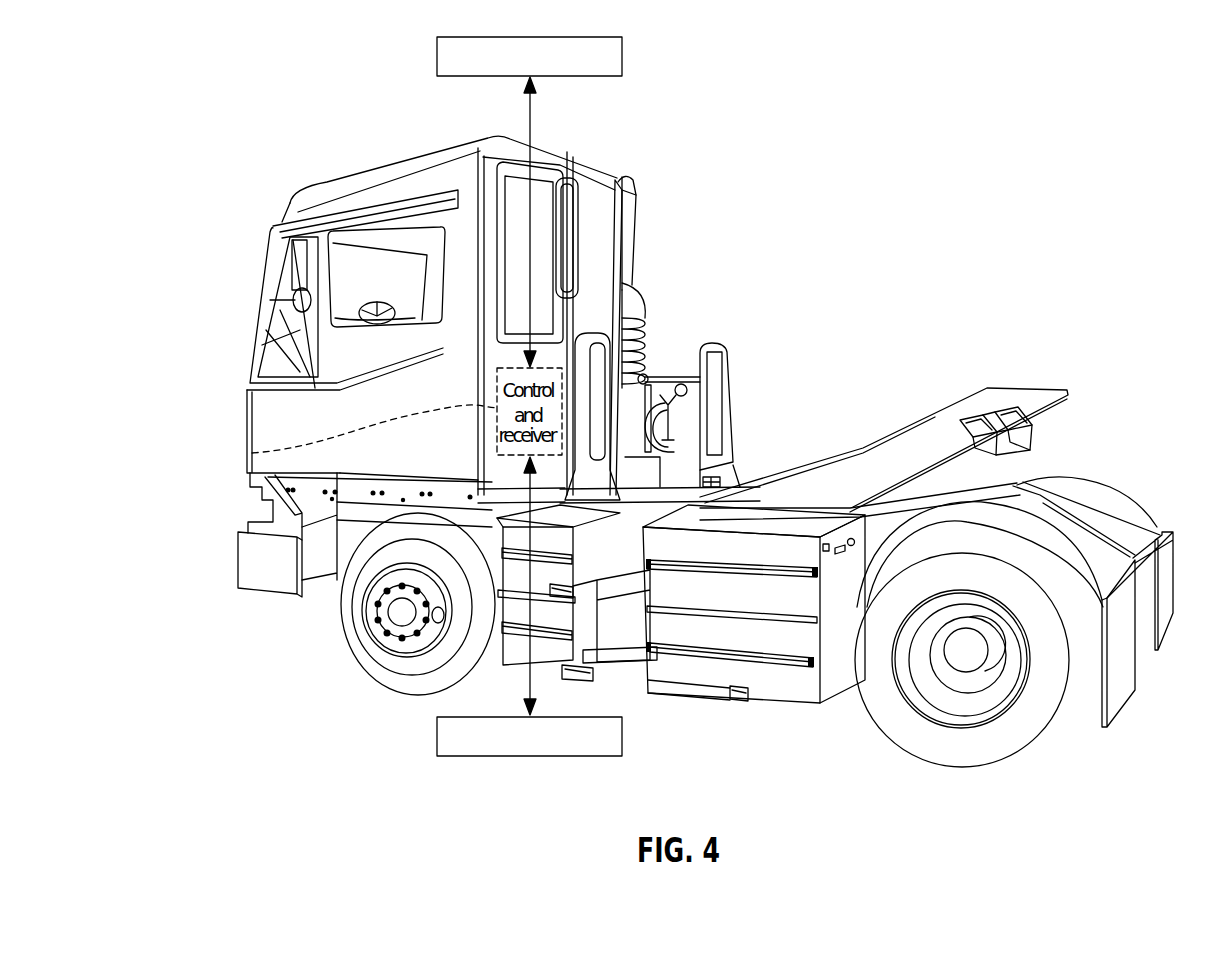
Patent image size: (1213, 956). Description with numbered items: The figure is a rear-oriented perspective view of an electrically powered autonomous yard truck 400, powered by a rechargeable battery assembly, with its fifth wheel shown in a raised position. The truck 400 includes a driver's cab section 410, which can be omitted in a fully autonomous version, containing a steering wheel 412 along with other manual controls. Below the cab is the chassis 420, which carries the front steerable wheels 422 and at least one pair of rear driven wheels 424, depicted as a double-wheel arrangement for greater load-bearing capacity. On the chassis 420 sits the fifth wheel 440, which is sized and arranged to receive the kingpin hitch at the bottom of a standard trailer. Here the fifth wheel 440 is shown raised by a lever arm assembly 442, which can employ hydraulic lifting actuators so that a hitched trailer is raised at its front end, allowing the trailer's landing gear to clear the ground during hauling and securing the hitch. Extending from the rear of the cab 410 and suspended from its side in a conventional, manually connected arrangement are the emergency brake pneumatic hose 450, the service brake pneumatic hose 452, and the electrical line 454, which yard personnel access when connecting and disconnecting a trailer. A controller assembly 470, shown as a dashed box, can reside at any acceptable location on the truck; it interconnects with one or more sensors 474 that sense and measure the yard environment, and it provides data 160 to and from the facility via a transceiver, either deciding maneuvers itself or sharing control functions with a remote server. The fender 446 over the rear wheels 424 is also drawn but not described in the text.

The data 160 is at (622, 57).
The yard truck 400 is at (662, 180).
The driver's cab section 410 is at (443, 172).
The steering wheel 412 is at (372, 300).
The chassis 420 is at (848, 477).
The front steerable wheels 422 is at (345, 647).
The rear driven wheels 424 is at (968, 766).
The fifth wheel 440 is at (960, 390).
The lever arm assembly 442 is at (1042, 374).
The fender 446 is at (825, 537).
The emergency brake pneumatic hose 450 is at (645, 343).
The service brake pneumatic hose 452 is at (627, 310).
The electrical line 454 is at (678, 425).
The controller assembly 470 is at (252, 453).
The sensors 474 is at (560, 756).